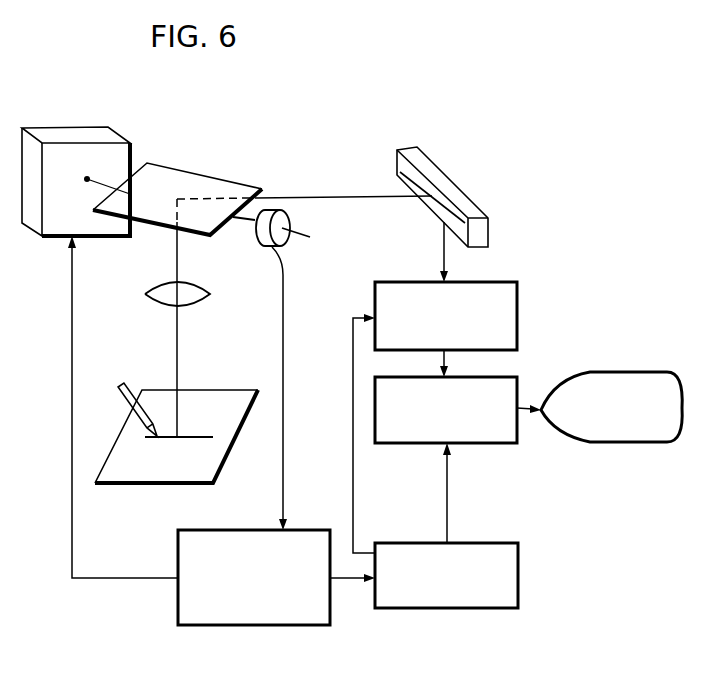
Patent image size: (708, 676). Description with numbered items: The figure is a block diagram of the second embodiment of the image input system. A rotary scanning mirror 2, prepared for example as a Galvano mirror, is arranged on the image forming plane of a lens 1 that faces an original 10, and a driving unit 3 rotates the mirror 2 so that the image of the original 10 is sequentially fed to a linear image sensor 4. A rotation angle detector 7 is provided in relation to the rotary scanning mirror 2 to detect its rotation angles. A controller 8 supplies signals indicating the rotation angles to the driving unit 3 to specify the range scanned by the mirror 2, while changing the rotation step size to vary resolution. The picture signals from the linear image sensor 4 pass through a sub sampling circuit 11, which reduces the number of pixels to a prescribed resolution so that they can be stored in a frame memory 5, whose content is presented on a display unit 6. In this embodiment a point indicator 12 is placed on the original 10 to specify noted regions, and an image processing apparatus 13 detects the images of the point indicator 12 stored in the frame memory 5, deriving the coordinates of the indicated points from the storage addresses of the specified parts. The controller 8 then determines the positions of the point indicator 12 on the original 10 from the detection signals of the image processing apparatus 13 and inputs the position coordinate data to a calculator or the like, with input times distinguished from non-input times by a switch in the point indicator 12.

The lens 1 is at (195, 293).
The rotary scanning mirror 2 is at (180, 176).
The driving unit 3 is at (112, 130).
The linear image sensor 4 is at (443, 183).
The frame memory 5 is at (507, 377).
The display unit 6 is at (622, 372).
The rotation angle detector 7 is at (282, 211).
The controller 8 is at (305, 530).
The original 10 is at (213, 395).
The sub sampling circuit 11 is at (518, 318).
The point indicator 12 is at (130, 383).
The image processing apparatus 13 is at (518, 577).